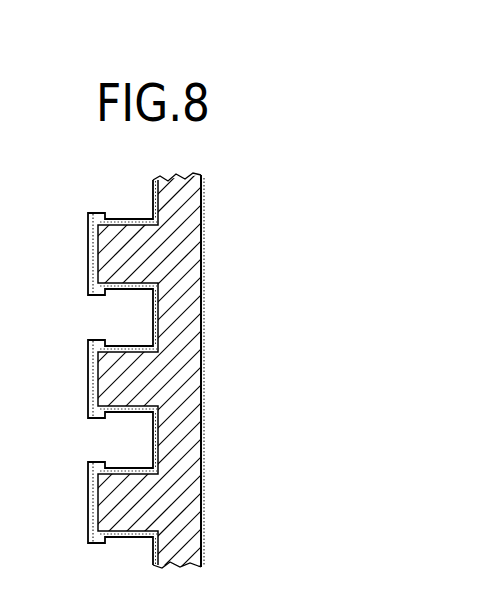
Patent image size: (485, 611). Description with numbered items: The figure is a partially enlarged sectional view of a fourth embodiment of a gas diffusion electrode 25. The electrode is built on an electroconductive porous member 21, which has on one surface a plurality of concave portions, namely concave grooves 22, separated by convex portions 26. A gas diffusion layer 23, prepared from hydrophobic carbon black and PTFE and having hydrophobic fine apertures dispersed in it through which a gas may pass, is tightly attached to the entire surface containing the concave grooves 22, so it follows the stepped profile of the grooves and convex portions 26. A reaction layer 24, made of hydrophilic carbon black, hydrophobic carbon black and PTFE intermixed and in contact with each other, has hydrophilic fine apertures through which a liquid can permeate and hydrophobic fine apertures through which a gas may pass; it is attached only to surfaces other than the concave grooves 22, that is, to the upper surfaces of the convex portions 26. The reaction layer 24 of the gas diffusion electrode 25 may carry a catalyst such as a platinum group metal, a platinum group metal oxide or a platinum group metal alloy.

The electroconductive porous member 21 is at (185, 256).
The concave grooves 22 is at (113, 308).
The gas diffusion layer 23 is at (112, 338).
The reaction layer 24 is at (86, 395).
The gas diffusion electrode 25 is at (216, 216).
The convex portions 26 is at (88, 505).